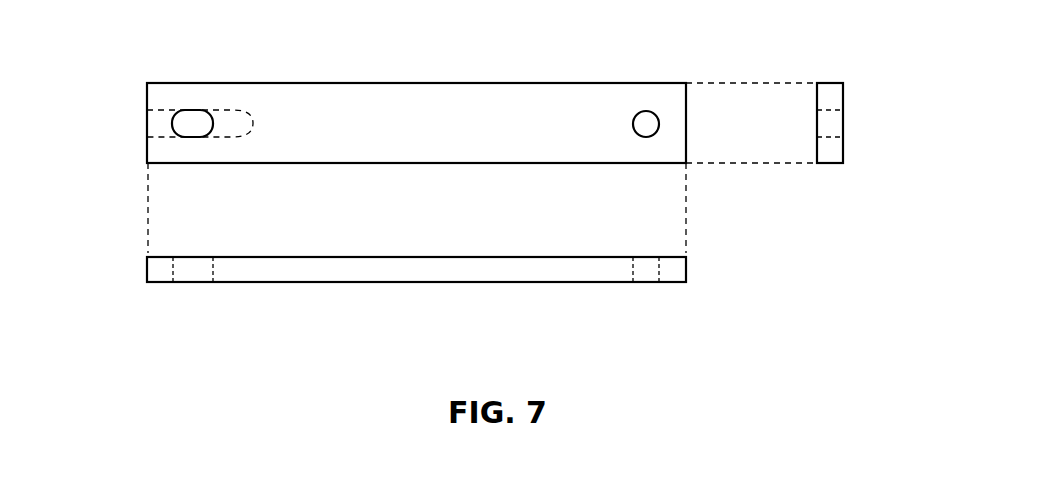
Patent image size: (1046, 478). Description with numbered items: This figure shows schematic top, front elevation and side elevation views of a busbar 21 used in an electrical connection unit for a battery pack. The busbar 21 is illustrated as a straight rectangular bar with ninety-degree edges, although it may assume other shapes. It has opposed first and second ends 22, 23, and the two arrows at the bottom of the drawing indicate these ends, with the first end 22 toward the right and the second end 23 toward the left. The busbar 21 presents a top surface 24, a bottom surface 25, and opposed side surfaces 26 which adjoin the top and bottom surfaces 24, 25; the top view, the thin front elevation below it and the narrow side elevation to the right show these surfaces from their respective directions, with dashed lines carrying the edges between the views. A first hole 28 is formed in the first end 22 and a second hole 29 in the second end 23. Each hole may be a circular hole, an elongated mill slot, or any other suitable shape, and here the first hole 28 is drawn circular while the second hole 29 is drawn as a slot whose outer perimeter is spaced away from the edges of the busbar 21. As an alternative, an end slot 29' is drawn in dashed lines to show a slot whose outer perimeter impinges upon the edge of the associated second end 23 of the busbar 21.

The busbar 21 is at (314, 36).
The first end 22 is at (628, 313).
The second end 23 is at (195, 314).
The top surface 24 is at (530, 113).
The bottom surface 25 is at (843, 122).
The side surfaces 26 is at (403, 83).
The first hole 28 is at (647, 122).
The second hole 29 is at (192, 85).
The end slot 29' is at (216, 164).